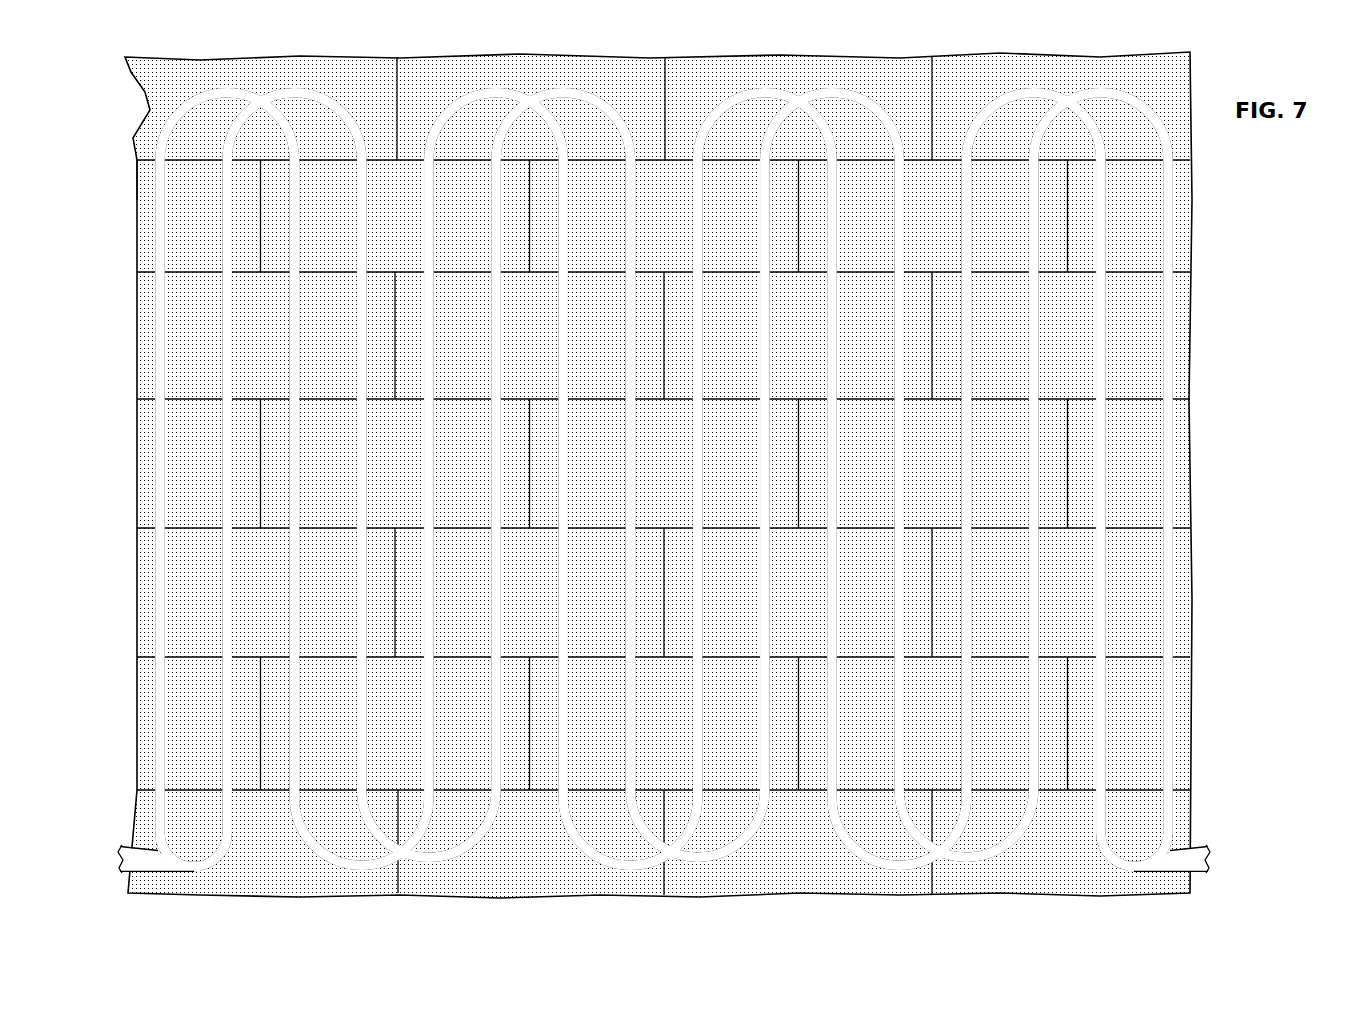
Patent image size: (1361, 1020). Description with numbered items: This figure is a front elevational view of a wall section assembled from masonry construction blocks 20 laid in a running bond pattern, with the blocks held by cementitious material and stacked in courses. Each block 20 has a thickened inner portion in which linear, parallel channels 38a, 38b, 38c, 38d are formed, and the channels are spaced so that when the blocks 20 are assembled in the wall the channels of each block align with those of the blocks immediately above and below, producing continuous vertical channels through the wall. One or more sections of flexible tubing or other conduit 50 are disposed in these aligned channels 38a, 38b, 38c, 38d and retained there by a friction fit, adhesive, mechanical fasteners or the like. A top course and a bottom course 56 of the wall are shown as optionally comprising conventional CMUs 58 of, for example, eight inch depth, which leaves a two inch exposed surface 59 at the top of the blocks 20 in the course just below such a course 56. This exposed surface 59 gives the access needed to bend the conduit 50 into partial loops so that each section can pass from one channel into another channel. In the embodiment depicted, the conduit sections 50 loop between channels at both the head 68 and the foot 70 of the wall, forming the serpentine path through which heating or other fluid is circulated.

The masonry construction block 20 is at (179, 220).
The channel 38a is at (335, 145).
The channel 38b is at (397, 110).
The channel 38c is at (448, 115).
The channel 38d is at (485, 145).
The conduit 50 is at (235, 100).
The course 56 is at (136, 97).
The conventional CMU 58 is at (165, 92).
The exposed surface 59 is at (137, 152).
The head of the wall 68 is at (1204, 92).
The foot of the wall 70 is at (1206, 820).